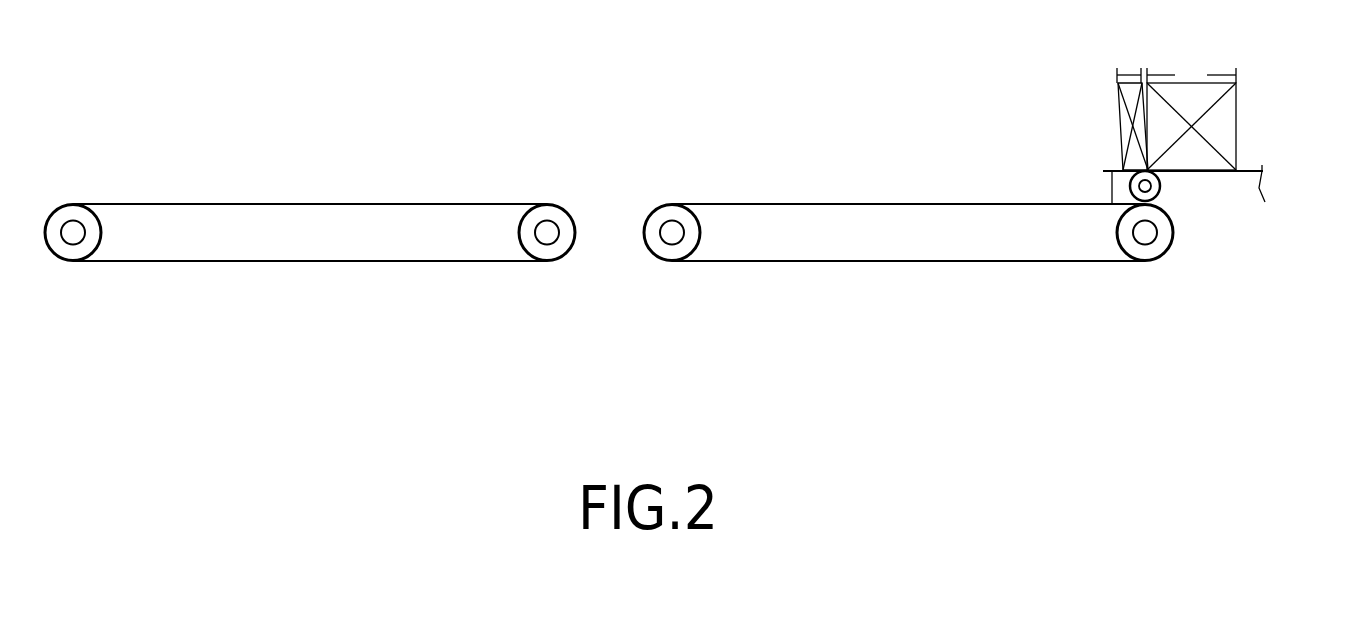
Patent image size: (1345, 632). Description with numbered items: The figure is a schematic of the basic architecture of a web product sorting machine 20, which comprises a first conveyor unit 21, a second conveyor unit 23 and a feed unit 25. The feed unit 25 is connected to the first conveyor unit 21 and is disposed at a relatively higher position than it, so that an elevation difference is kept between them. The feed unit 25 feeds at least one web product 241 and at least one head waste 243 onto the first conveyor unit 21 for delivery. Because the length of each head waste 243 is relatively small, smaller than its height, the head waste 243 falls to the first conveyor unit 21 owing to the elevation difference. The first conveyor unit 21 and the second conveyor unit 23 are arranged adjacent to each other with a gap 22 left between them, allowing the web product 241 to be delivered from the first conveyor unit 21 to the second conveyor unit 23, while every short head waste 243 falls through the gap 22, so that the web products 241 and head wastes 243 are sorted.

The web product sorting machine 20 is at (202, 47).
The first conveyor unit 21 is at (893, 184).
The gap 22 is at (593, 203).
The second conveyor unit 23 is at (260, 185).
The feed unit 25 is at (1213, 202).
The web product 241 is at (1238, 117).
The head waste 243 is at (1119, 118).